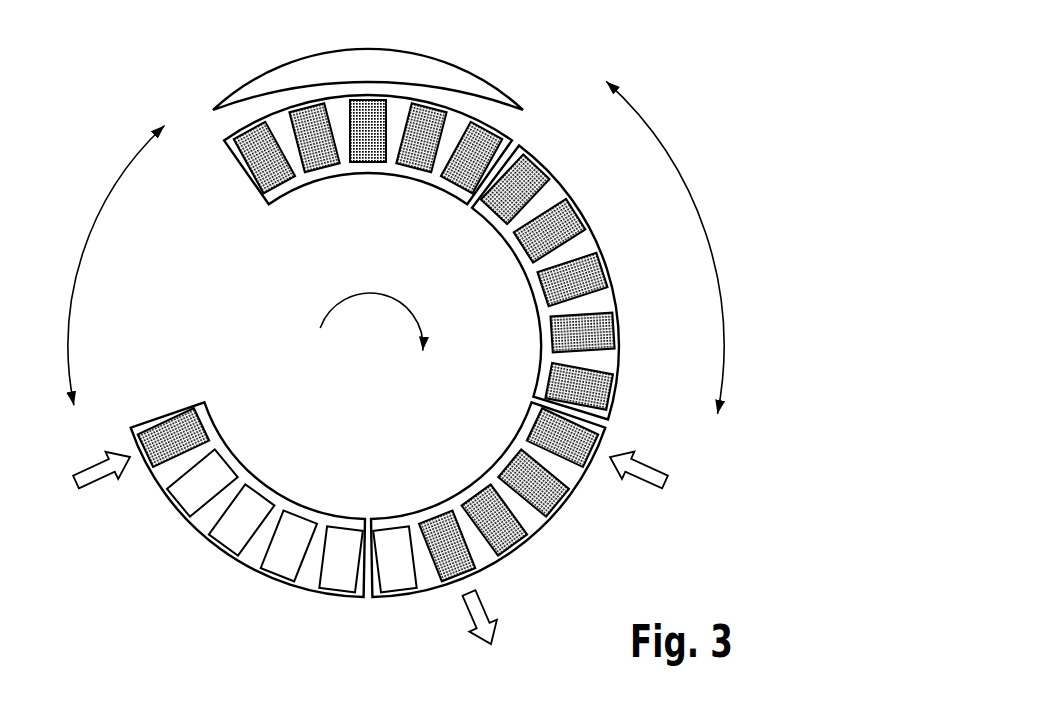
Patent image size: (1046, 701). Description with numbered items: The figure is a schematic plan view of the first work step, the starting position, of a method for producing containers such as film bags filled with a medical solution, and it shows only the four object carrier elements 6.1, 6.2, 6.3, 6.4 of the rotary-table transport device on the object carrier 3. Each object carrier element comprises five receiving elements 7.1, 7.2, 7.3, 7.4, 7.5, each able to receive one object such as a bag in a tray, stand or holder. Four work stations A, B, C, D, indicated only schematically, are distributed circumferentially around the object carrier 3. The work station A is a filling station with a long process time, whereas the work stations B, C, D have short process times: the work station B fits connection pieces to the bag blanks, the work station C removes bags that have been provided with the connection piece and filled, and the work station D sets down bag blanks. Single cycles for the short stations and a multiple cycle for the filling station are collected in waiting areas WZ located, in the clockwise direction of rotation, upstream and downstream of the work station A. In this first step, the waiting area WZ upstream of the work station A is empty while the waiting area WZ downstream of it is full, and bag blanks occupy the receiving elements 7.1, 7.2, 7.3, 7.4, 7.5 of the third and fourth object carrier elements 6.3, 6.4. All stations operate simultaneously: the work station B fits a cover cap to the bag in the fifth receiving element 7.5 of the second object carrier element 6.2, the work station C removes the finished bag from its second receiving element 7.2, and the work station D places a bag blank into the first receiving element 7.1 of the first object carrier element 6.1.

The object carrier 3 is at (408, 319).
The first object carrier element 6.1 is at (294, 489).
The second object carrier element 6.2 is at (481, 461).
The third object carrier element 6.3 is at (630, 290).
The fourth object carrier element 6.4 is at (370, 180).
The first receiving element 7.1 is at (463, 167).
The second receiving element 7.2 is at (423, 147).
The third receiving element 7.3 is at (372, 116).
The fourth receiving element 7.4 is at (318, 148).
The fifth receiving element 7.5 is at (268, 172).
The work station A (filling station) A is at (368, 59).
The work station B is at (651, 478).
The work station C is at (485, 635).
The work station D is at (91, 478).
The waiting area WZ is at (88, 240).